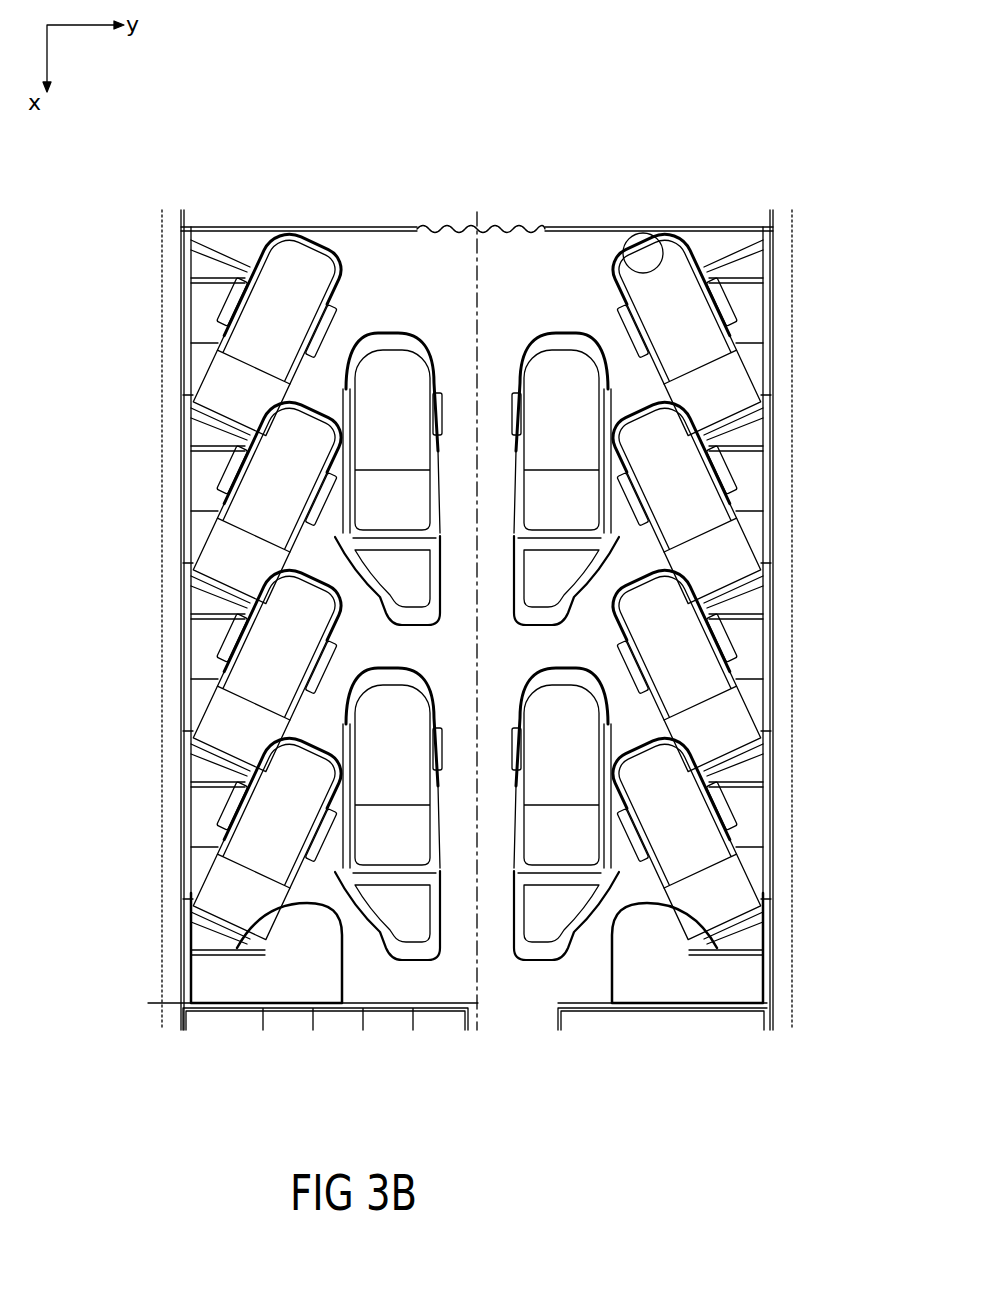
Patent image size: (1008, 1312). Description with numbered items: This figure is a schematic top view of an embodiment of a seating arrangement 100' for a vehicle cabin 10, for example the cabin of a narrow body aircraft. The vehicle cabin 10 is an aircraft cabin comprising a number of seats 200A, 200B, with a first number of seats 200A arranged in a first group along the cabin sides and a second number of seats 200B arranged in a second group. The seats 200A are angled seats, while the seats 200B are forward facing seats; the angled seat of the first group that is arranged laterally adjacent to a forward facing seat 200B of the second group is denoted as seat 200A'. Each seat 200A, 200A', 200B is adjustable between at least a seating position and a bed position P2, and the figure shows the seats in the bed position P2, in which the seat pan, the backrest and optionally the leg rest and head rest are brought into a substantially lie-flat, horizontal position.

The vehicle cabin 10 is at (535, 165).
The seating arrangement 100' is at (477, 512).
The seat 200A is at (743, 498).
The angled seat 200A' is at (747, 498).
The seat 200B is at (558, 376).
The bed position P2 is at (553, 376).